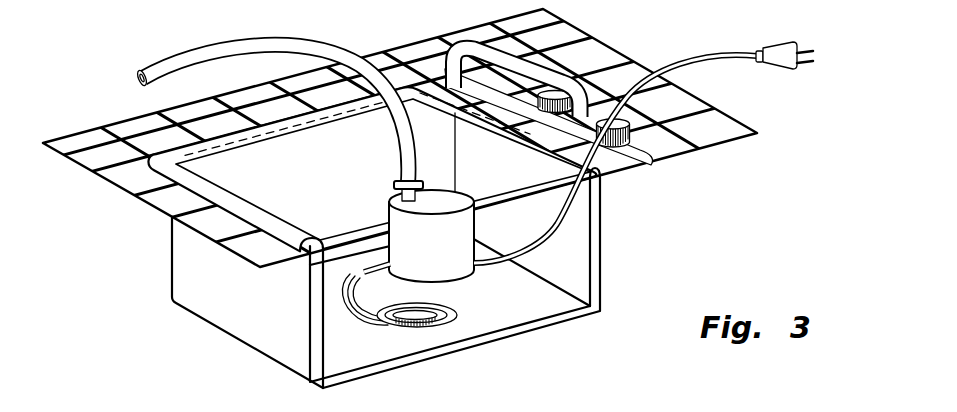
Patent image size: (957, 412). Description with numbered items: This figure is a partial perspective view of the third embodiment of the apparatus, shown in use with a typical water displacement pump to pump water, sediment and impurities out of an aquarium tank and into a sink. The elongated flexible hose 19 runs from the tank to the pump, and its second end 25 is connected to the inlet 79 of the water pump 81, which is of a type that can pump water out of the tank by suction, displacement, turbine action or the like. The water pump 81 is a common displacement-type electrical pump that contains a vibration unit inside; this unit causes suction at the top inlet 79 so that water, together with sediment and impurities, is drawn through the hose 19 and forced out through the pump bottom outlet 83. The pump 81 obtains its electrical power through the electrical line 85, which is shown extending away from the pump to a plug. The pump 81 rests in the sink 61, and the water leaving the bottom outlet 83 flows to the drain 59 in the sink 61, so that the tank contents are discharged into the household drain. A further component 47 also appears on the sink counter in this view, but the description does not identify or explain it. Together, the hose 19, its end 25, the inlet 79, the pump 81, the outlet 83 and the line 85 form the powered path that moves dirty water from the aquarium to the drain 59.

The flexible hose 19 is at (178, 62).
The second end of flexible hose 25 is at (411, 168).
The faucet spout 47 is at (476, 50).
The drain 59 is at (440, 300).
The sink 61 is at (241, 306).
The inlet 79 is at (394, 188).
The water pump 81 is at (471, 228).
The pump bottom outlet 83 is at (376, 265).
The electrical line 85 is at (716, 53).